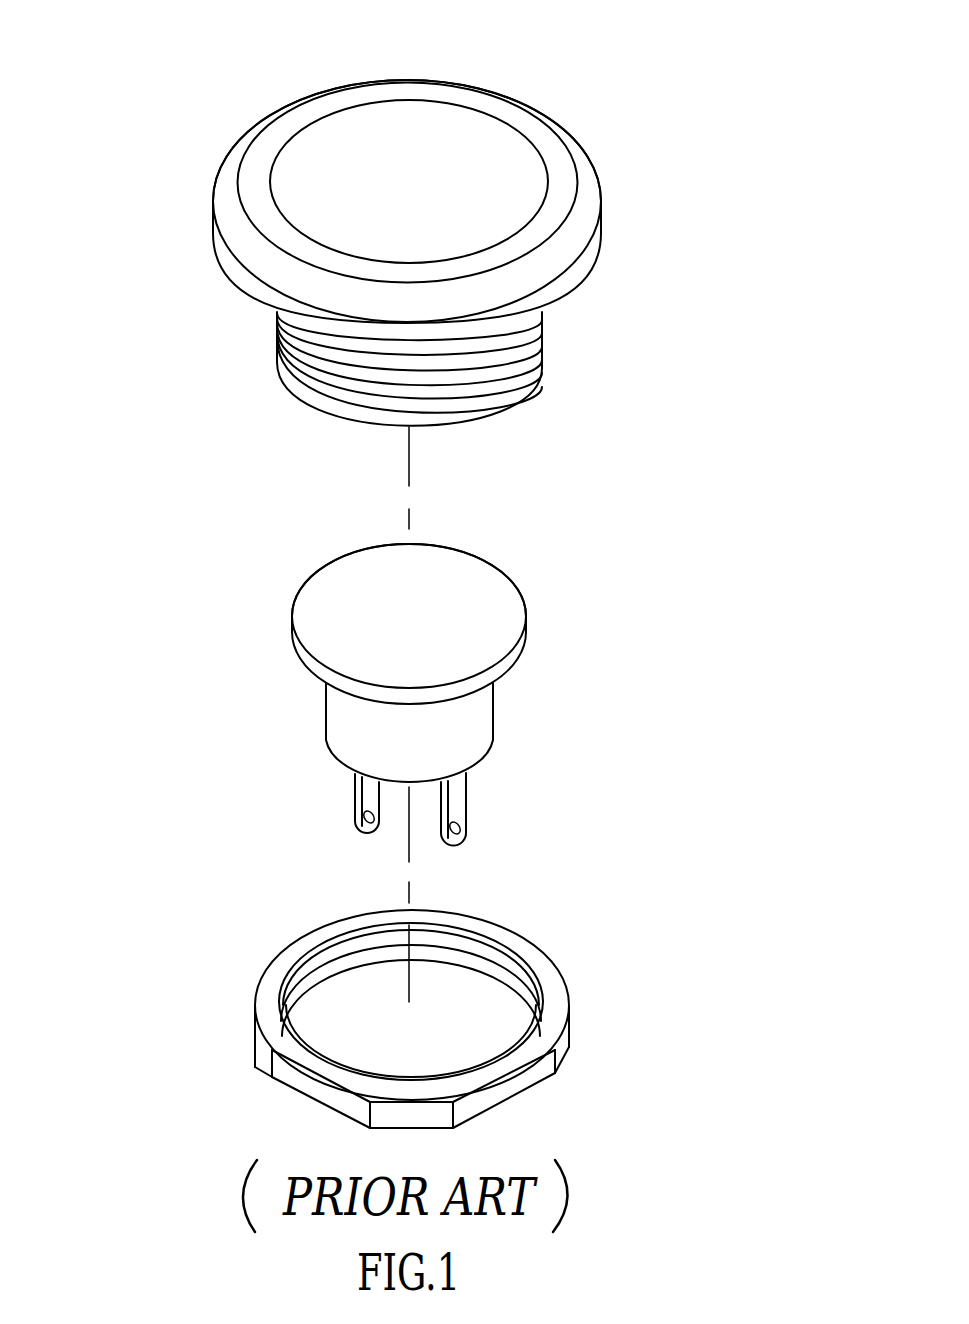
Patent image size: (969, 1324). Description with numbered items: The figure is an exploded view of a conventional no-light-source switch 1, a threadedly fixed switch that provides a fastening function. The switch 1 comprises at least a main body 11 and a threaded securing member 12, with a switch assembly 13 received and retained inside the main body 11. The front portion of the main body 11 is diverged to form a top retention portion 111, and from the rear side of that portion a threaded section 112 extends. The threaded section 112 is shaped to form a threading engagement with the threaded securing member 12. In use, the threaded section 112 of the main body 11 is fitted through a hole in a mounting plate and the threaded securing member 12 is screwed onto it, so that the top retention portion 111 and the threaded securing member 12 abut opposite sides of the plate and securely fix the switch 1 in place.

The no-light-source switch 1 is at (407, 567).
The main body 11 is at (485, 216).
The top retention portion 111 is at (490, 137).
The threaded section 112 is at (534, 338).
The threaded securing member 12 is at (563, 990).
The switch assembly 13 is at (507, 618).